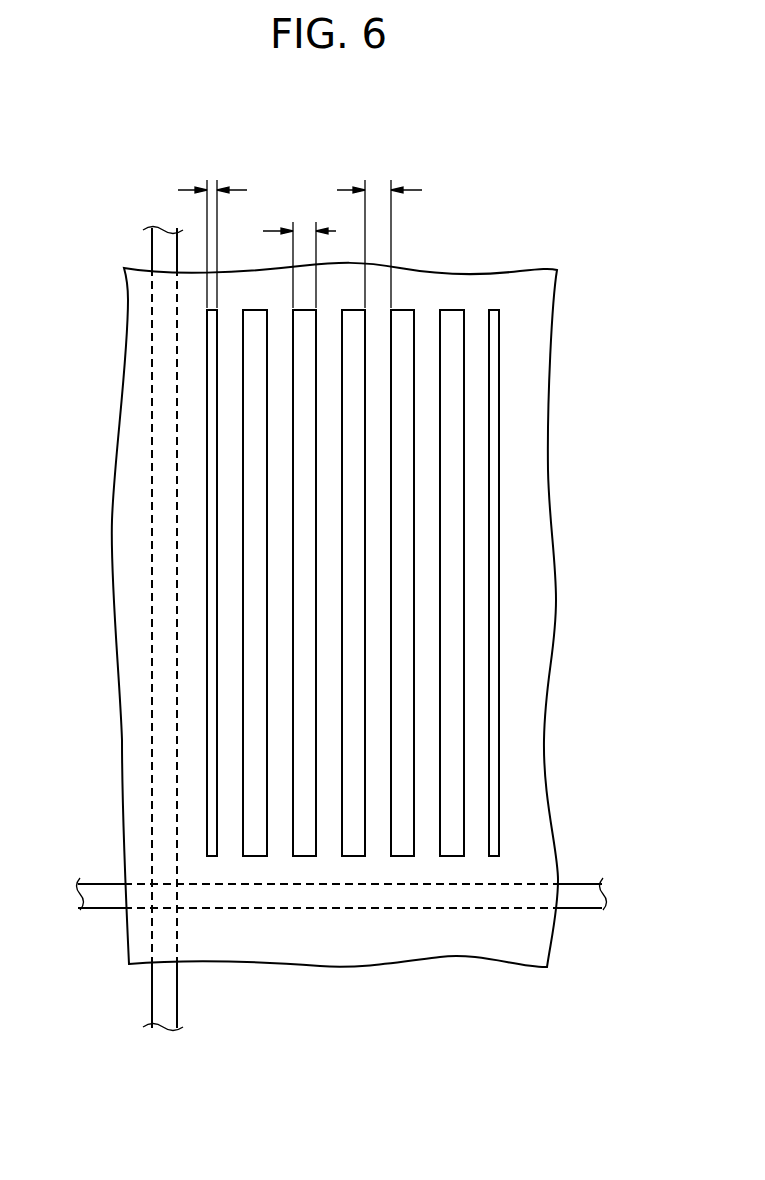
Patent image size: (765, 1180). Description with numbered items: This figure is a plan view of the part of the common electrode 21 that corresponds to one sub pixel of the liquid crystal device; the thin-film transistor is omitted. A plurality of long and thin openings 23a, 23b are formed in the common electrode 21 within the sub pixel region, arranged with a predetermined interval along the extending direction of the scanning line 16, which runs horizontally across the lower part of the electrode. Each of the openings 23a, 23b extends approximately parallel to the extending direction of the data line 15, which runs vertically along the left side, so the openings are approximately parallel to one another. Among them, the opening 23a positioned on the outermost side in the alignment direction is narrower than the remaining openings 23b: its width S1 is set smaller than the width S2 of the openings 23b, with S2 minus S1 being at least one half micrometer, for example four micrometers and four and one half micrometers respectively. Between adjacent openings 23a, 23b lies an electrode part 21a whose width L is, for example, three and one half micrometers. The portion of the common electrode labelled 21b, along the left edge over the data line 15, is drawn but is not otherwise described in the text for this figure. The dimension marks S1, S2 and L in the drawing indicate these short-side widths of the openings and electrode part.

The data line 15 is at (163, 233).
The scanning line 16 is at (592, 893).
The common electrode 21 is at (537, 623).
The electrode part 21a is at (423, 845).
The outer portion of electrode 21b is at (187, 832).
The opening 23a is at (207, 768).
The openings 23b is at (365, 843).
The width of outermost opening S1 is at (212, 231).
The width of other openings S2 is at (299, 250).
The width of electrode part L is at (379, 230).